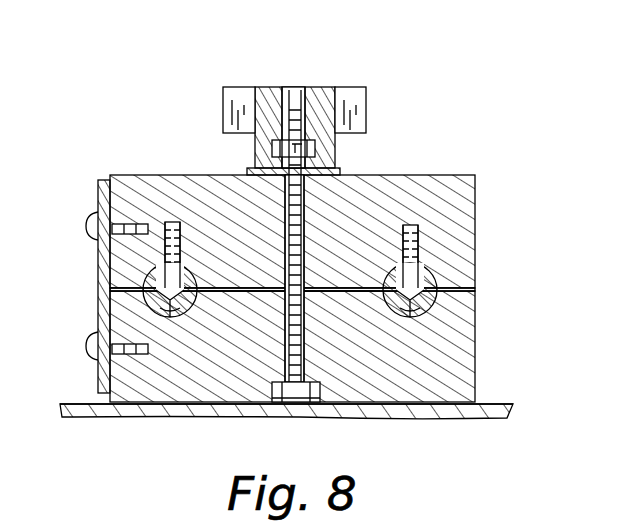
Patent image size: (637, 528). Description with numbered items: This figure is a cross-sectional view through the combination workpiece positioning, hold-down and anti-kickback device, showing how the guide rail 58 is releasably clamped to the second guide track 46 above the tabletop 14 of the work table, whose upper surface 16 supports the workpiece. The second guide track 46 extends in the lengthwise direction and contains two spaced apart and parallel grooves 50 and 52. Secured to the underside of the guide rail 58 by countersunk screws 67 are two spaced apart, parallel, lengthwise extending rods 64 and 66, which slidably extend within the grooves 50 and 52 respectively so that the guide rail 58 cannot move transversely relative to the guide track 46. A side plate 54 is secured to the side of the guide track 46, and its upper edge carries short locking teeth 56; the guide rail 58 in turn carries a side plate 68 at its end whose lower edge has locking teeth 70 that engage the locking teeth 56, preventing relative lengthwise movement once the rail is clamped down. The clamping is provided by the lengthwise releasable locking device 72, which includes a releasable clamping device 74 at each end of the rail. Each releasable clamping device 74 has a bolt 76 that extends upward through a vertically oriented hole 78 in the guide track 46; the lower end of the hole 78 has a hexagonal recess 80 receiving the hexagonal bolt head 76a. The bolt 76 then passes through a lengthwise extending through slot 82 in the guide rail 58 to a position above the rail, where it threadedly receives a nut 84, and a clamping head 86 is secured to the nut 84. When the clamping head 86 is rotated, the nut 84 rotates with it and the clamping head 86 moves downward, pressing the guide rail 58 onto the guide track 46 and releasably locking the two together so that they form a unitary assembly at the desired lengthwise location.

The tabletop 14 is at (500, 420).
The upper surface 16 is at (498, 405).
The second guide track 46 is at (465, 357).
The groove 50 is at (167, 314).
The groove 52 is at (423, 317).
The side plate 54 is at (98, 372).
The locking teeth 56 is at (98, 289).
The guide rail 58 is at (430, 176).
The rod 64 is at (152, 272).
The rod 66 is at (433, 276).
The countersunk screw 67 is at (165, 225).
The side plate 68 is at (98, 200).
The locking teeth 70 is at (98, 286).
The lengthwise releasable locking device 72 is at (357, 75).
The releasable clamping device 74 is at (372, 118).
The bolt 76 is at (290, 312).
The hexagonal bolt head 76a is at (290, 405).
The hole 78 is at (320, 370).
The hexagonal recess 80 is at (273, 405).
The through slot 82 is at (306, 252).
The nut 84 is at (272, 148).
The clamping head 86 is at (240, 87).